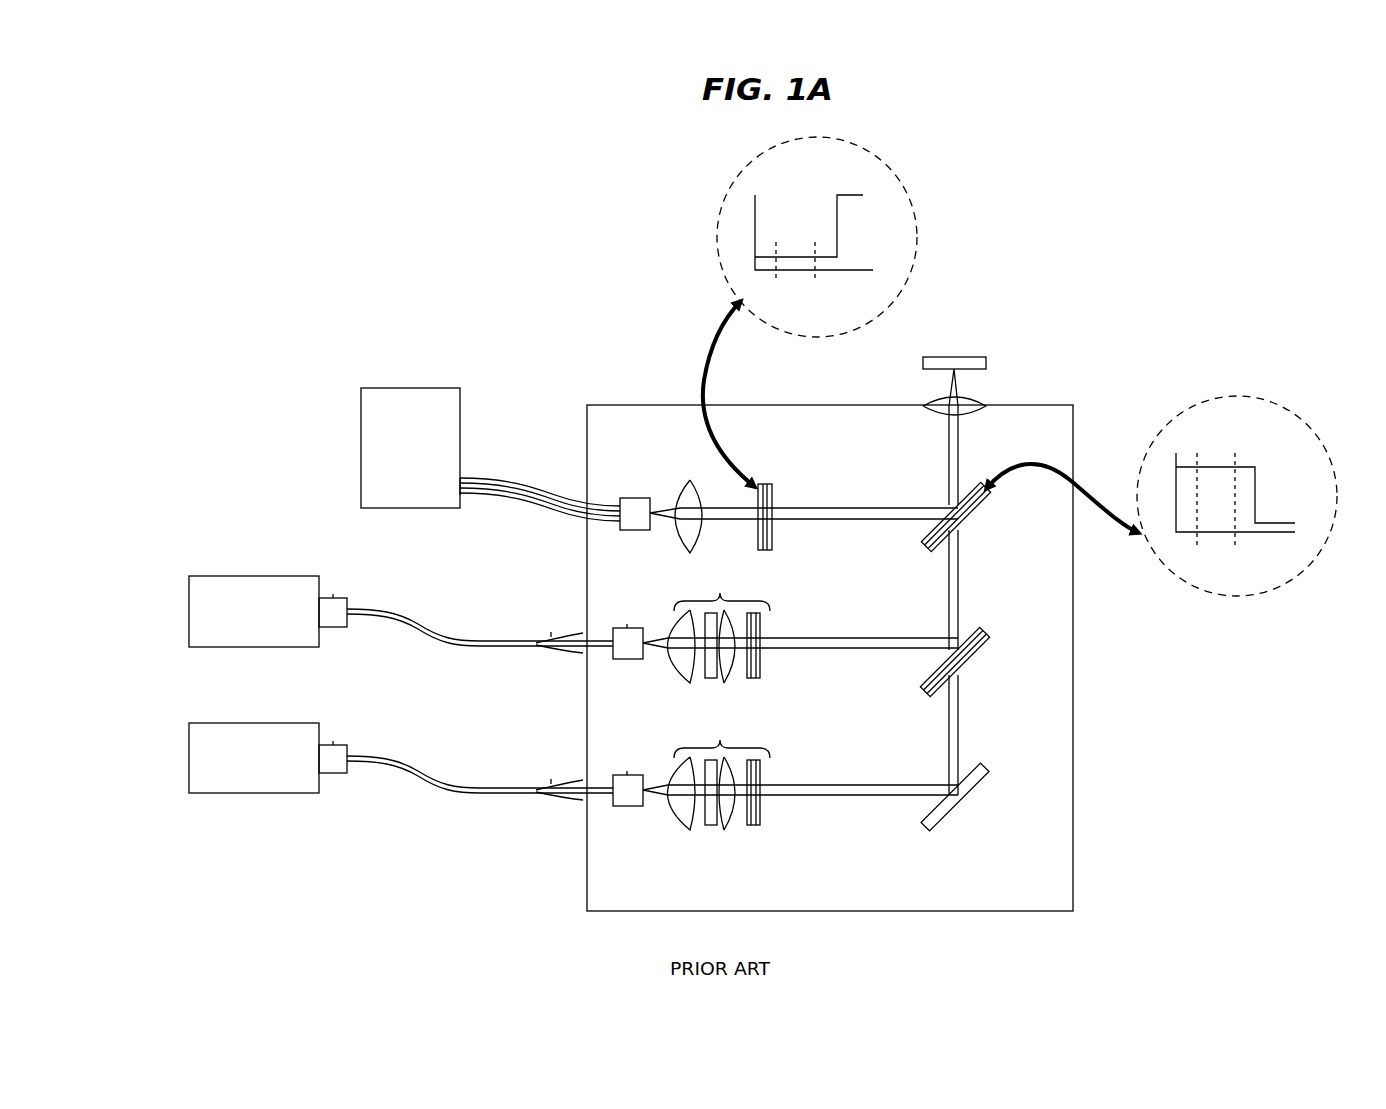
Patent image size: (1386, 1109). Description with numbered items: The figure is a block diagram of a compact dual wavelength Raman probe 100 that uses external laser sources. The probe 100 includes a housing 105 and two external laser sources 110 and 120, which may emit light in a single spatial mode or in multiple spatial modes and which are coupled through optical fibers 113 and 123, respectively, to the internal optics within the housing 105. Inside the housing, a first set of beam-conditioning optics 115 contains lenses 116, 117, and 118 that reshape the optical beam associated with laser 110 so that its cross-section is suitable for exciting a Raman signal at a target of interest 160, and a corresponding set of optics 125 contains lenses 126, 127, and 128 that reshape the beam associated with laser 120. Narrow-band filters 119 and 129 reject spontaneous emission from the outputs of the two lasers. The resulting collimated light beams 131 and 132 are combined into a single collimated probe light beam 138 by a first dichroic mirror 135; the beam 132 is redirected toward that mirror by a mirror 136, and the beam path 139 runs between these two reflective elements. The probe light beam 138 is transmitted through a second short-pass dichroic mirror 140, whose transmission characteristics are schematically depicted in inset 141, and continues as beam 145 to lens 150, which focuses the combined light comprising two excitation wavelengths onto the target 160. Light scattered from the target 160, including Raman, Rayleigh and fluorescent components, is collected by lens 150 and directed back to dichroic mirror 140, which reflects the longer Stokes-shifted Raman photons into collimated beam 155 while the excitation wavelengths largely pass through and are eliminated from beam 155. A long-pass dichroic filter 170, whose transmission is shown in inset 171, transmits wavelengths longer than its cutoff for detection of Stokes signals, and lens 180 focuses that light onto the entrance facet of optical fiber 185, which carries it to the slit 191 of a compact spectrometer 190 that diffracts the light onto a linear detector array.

The dual wavelength Raman probe 100 is at (439, 244).
The housing 105 is at (596, 386).
The external laser source 110 is at (189, 603).
The optical fiber 113 is at (427, 628).
The first beam conditioning optics 115 is at (716, 651).
The lens 116 is at (680, 685).
The lens 117 is at (711, 680).
The lens 118 is at (729, 686).
The narrow-band filter 119 is at (754, 680).
The external laser source 120 is at (189, 750).
The optical fiber 123 is at (427, 775).
The second beam conditioning optics 125 is at (716, 807).
The lens 126 is at (680, 832).
The lens 127 is at (711, 827).
The lens 128 is at (729, 833).
The narrow-band filter 129 is at (754, 827).
The collimated light beam 131 is at (862, 636).
The collimated light beam 132 is at (862, 783).
The first dichroic mirror 135 is at (977, 655).
The mirror 136 is at (969, 796).
The probe light beam 138 is at (967, 585).
The beam segment 139 is at (967, 732).
The second short-pass dichroic mirror 140 is at (977, 512).
The inset 141 is at (1177, 421).
The excitation beam toward sample 145 is at (967, 459).
The lens 150 is at (930, 400).
The collimated beam 155 is at (862, 505).
The target 160 is at (970, 357).
The long-pass dichroic filter 170 is at (765, 484).
The inset 171 is at (734, 182).
The lens 180 is at (688, 490).
The optical fiber 185 is at (514, 478).
The compact spectrometer 190 is at (361, 430).
The slit 191 is at (462, 497).